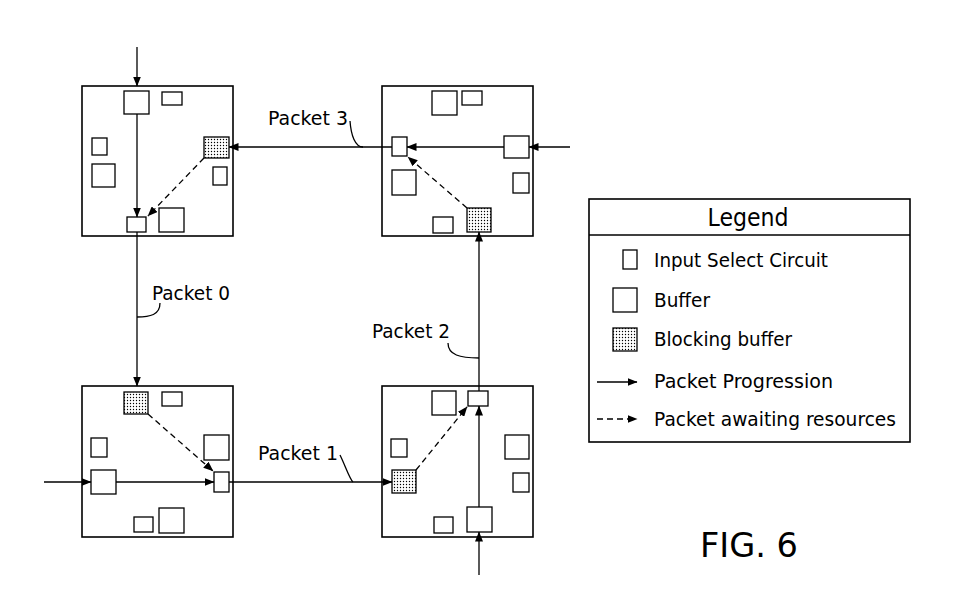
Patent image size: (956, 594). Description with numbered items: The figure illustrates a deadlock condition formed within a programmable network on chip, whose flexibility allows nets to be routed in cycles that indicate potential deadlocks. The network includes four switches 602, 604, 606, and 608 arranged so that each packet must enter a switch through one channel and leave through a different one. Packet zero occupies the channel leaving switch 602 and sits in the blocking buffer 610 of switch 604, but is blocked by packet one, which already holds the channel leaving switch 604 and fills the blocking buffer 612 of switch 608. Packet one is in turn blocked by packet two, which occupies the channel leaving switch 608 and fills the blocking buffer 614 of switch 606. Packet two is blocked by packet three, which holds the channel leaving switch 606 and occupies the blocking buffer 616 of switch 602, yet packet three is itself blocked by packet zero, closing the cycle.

The switch 602 is at (82, 198).
The switch 604 is at (82, 443).
The switch 606 is at (382, 217).
The switch 608 is at (382, 443).
The buffer 610 is at (124, 397).
The buffer 612 is at (392, 489).
The buffer 614 is at (468, 233).
The buffer 616 is at (230, 158).